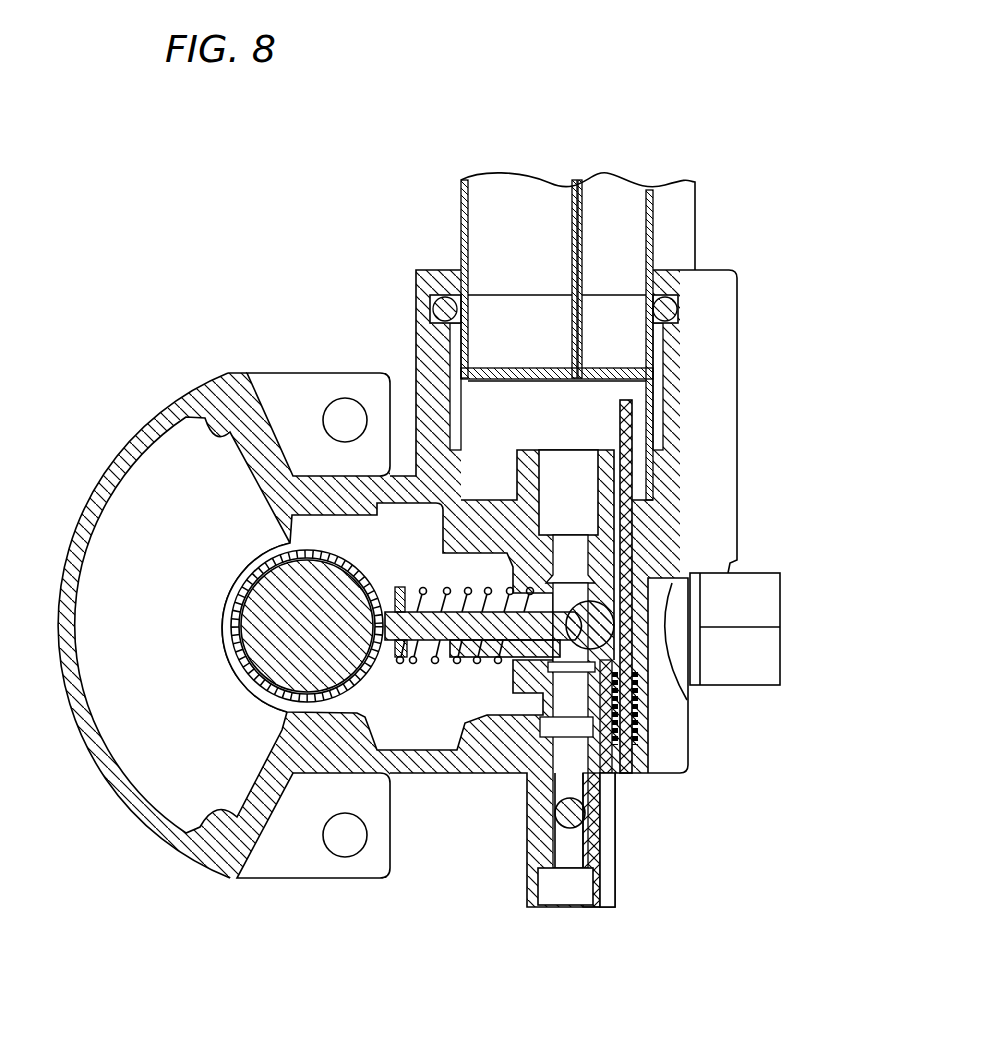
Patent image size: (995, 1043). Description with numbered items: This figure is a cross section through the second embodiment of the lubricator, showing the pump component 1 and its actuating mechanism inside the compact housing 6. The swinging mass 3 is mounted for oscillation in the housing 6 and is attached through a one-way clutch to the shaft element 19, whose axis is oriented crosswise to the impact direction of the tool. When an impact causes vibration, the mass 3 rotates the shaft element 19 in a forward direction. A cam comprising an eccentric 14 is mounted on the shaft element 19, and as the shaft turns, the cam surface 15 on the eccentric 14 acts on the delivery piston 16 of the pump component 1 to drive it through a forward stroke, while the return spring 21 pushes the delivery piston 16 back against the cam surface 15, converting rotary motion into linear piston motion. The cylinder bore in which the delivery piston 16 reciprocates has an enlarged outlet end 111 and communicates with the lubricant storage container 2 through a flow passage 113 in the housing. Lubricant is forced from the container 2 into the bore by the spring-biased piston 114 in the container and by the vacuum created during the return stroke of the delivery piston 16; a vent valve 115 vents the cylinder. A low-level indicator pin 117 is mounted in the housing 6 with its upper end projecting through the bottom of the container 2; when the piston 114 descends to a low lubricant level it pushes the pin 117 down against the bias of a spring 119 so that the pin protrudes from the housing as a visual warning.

The pump component 1 is at (793, 587).
The storage container 2 is at (695, 228).
The mass 3 is at (147, 772).
The housing 6 is at (63, 718).
The eccentric 14 is at (270, 640).
The cam surface 15 is at (293, 545).
The delivery piston 16 is at (483, 598).
The shaft element 19 is at (343, 667).
The return spring 21 is at (447, 660).
The enlarged outlet end 111 is at (765, 685).
The flow passage 113 is at (558, 483).
The spring-biased piston 114 is at (617, 367).
The vent valve 115 is at (600, 855).
The low-level indicator pin 117 is at (633, 410).
The spring 119 is at (640, 705).